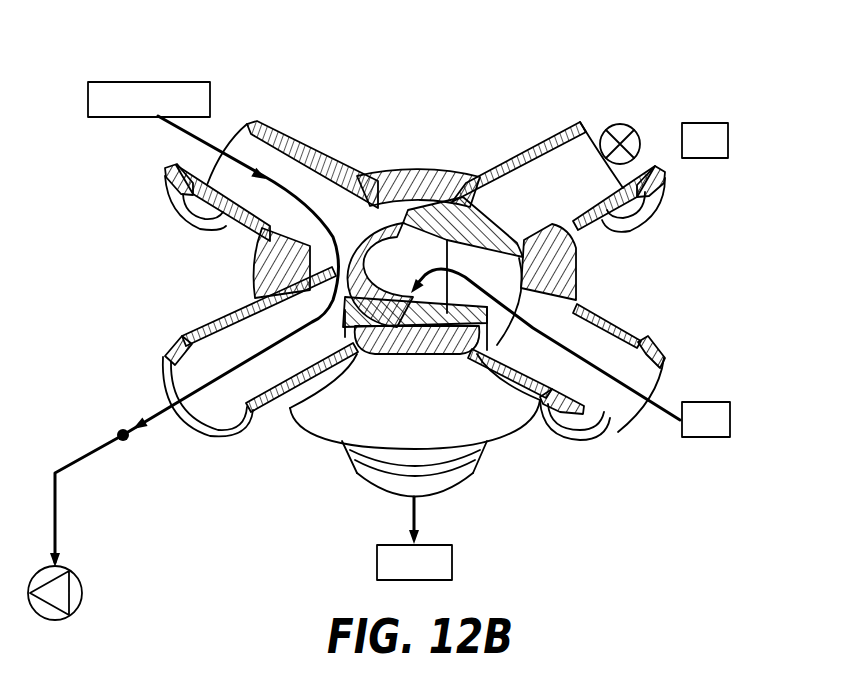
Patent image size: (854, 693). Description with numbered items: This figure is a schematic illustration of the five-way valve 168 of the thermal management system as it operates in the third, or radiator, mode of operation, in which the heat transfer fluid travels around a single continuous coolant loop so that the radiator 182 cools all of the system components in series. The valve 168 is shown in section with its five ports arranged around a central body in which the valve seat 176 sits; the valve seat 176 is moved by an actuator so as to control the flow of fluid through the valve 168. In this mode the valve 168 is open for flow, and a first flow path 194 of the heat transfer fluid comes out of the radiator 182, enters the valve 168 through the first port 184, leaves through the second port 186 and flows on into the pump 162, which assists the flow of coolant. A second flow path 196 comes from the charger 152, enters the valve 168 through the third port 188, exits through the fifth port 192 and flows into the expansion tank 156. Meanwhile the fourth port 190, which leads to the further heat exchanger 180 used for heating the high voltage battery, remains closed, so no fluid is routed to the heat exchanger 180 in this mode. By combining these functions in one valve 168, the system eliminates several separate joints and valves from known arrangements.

The charger 152 is at (713, 402).
The expansion tank 156 is at (453, 556).
The pump 162 is at (83, 592).
The five-way valve 168 is at (618, 268).
The valve seat 176 is at (397, 310).
The heat exchanger 180 is at (705, 122).
The radiator 182 is at (152, 82).
The first port 184 is at (277, 123).
The second port 186 is at (172, 342).
The third port 188 is at (650, 337).
The fourth port 190 is at (567, 120).
The fifth port 192 is at (343, 468).
The first flow path 194 is at (168, 130).
The second flow path 196 is at (606, 425).